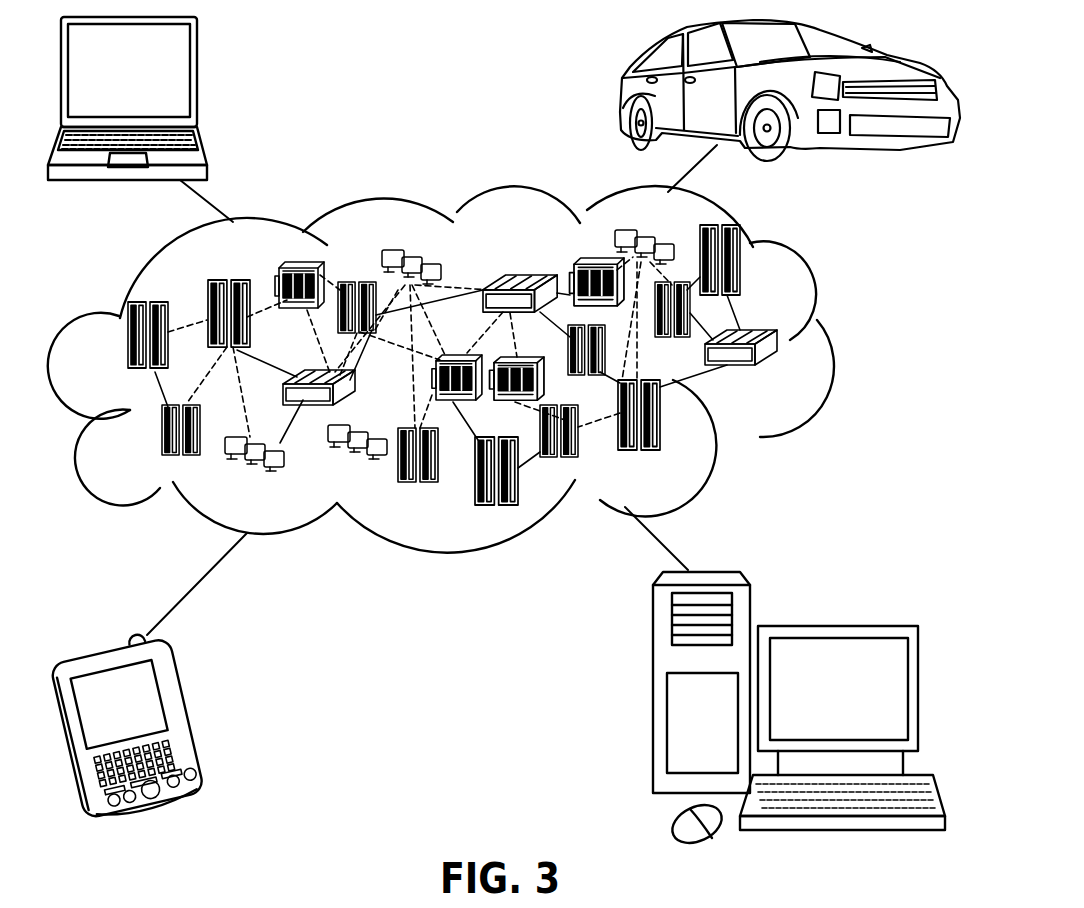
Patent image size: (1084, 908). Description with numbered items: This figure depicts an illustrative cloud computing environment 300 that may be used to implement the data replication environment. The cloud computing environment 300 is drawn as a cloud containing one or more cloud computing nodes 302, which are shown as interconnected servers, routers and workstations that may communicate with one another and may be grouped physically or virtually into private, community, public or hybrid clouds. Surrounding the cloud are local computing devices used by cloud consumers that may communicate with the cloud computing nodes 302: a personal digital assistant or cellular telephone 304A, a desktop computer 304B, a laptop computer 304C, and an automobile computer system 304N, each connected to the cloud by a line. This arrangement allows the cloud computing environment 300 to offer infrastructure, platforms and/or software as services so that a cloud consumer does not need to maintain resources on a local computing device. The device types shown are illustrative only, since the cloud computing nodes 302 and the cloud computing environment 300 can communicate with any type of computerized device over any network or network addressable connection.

The cloud computing environment 300 is at (840, 347).
The cloud computing nodes 302 is at (783, 374).
The personal digital assistant (PDA) or cellular telephone 304A is at (185, 718).
The desktop computer 304B is at (838, 626).
The laptop computer 304C is at (197, 78).
The automobile computer system 304N is at (622, 95).